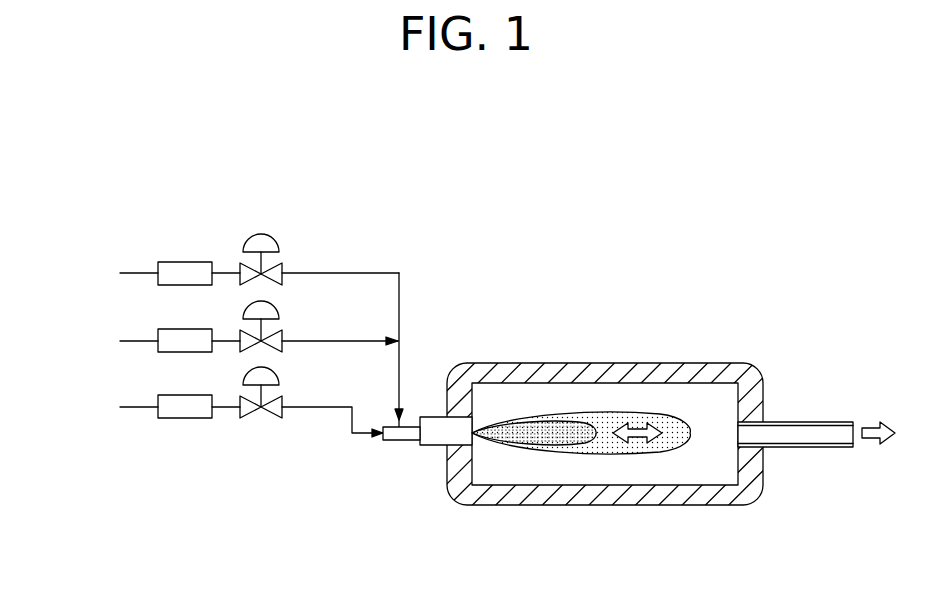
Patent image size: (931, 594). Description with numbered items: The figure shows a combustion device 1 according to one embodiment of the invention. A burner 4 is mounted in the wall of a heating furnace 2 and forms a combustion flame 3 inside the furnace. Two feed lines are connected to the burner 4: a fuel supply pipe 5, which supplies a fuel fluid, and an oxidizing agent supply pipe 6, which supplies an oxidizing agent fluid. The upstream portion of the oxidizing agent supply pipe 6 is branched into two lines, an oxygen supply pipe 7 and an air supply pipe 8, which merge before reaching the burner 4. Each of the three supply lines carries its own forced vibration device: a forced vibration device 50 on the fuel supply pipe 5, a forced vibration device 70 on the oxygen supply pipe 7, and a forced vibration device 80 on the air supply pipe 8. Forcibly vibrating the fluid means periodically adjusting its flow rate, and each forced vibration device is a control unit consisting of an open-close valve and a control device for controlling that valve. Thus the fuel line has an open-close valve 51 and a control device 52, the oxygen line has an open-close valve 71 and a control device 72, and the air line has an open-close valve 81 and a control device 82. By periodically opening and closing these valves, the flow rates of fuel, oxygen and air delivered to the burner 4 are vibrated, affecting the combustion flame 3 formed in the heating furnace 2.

The combustion device 1 is at (129, 204).
The heating furnace 2 is at (622, 363).
The combustion flame 3 is at (477, 457).
The burner 4 is at (428, 445).
The fuel supply pipe 5 is at (327, 407).
The oxidizing agent supply pipe 6 is at (400, 373).
The oxygen supply pipe 7 is at (358, 273).
The air supply pipe 8 is at (327, 341).
The forced vibration device 50 is at (270, 499).
The open-close valve 51 is at (257, 418).
The control device 52 is at (182, 418).
The forced vibration device 70 is at (187, 163).
The open-close valve 71 is at (262, 233).
The control device 72 is at (185, 262).
The forced vibration device 80 is at (58, 337).
The open-close valve 81 is at (248, 352).
The control device 82 is at (163, 352).